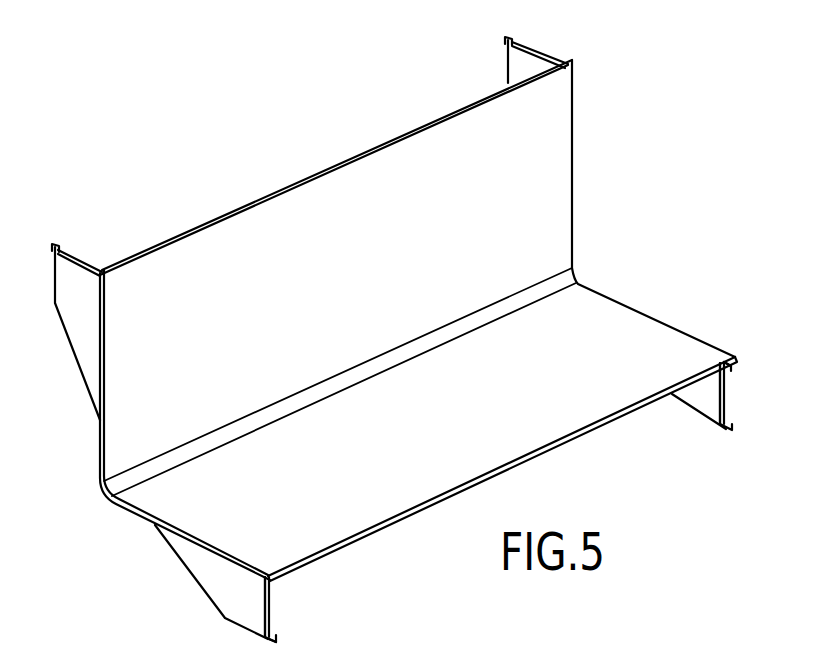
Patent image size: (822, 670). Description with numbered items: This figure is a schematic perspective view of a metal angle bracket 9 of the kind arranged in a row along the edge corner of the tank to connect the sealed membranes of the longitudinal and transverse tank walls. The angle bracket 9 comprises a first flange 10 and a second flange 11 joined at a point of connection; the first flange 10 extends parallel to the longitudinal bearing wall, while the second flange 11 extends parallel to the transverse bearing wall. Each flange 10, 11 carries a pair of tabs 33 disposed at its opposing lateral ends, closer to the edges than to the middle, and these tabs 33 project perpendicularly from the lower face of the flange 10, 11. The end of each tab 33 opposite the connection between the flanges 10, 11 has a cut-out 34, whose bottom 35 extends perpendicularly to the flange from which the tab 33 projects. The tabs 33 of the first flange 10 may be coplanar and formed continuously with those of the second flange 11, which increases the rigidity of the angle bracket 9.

The angle bracket 9 is at (409, 338).
The first flange 10 is at (643, 338).
The second flange 11 is at (549, 186).
The tab 33 is at (530, 68).
The cut-out 34 is at (730, 402).
The bottom of the cut-out 35 is at (723, 385).